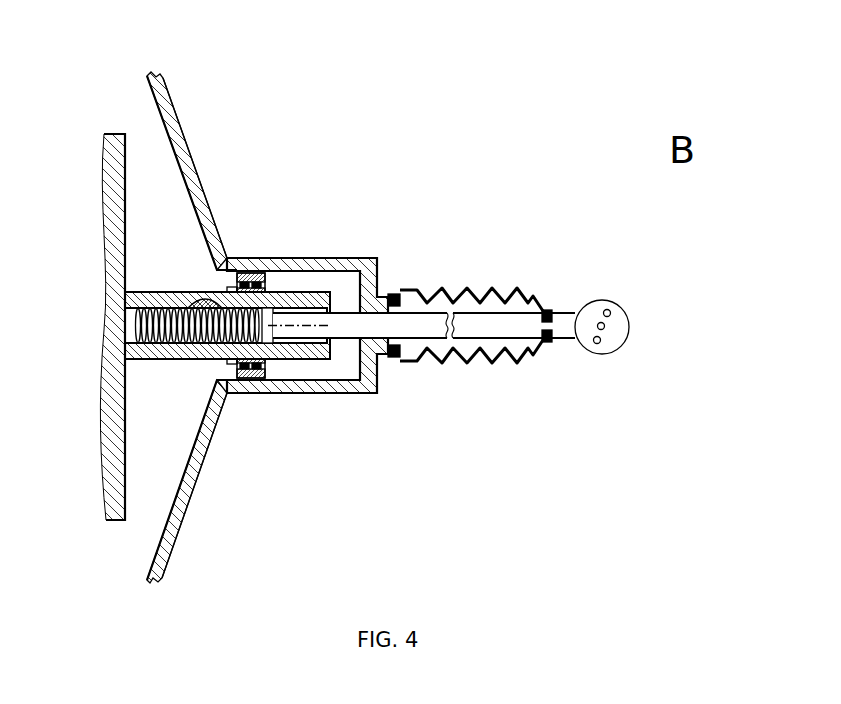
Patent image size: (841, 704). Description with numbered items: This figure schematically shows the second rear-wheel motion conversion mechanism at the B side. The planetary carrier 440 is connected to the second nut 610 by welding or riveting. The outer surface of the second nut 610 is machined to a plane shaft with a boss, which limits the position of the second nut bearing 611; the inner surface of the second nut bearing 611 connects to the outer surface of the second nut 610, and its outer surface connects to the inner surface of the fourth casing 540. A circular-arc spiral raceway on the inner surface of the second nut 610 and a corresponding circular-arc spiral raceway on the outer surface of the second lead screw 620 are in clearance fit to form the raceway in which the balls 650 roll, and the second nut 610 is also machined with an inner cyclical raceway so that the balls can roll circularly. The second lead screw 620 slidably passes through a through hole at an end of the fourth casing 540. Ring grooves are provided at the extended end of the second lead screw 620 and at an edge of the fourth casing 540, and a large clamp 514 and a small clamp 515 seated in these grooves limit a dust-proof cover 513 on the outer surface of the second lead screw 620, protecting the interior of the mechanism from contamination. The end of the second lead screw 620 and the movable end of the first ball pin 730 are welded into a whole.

The planetary carrier 440 is at (125, 424).
The fourth casing 540 is at (196, 170).
The second nut 610 is at (283, 300).
The second nut bearing 611 is at (258, 288).
The balls 650 is at (233, 363).
The second lead screw 620 is at (273, 326).
The large clamp 514 is at (393, 357).
The dust-proof cover 513 is at (458, 293).
The small clamp 515 is at (547, 344).
The first ball pin 730 is at (604, 331).